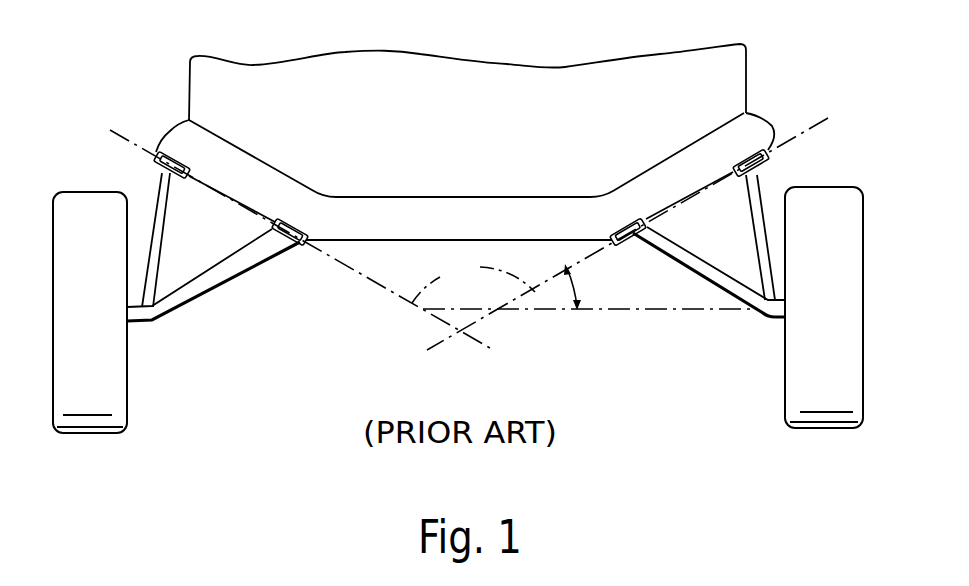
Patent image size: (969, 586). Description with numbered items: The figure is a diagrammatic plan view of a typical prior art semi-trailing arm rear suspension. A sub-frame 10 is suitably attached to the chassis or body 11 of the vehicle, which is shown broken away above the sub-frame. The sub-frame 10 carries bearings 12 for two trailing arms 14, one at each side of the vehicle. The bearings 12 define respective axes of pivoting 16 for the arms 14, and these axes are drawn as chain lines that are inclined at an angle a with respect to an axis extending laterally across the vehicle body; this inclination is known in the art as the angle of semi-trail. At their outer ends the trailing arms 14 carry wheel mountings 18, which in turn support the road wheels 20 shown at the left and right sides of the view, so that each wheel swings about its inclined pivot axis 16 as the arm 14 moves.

The sub-frame 10 is at (455, 216).
The chassis or body 11 is at (502, 96).
The bearings 12 is at (177, 162).
The trailing arms 14 is at (227, 268).
The axes of pivoting 16 is at (473, 277).
The wheel mountings 18 is at (137, 313).
The road wheels 20 is at (112, 393).
The angle of semi-trail a is at (581, 287).